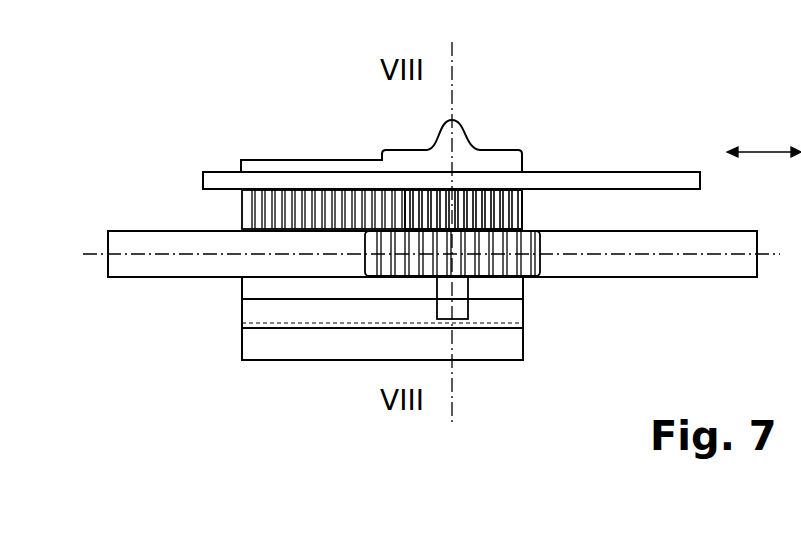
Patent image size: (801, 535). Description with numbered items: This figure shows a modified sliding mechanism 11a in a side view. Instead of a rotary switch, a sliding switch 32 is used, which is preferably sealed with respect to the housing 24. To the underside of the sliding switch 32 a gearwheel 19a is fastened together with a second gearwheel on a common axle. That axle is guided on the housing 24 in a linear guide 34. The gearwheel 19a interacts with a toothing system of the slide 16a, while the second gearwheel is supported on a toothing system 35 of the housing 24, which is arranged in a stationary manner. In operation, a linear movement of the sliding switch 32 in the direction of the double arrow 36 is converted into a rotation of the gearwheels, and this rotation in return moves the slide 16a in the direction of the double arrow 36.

The sliding mechanism 11a is at (545, 105).
The slide 16a is at (700, 263).
The gearwheel 19a is at (520, 210).
The housing 24 is at (297, 345).
The sliding switch 32 is at (643, 167).
The linear guide 34 is at (338, 307).
The toothing system 35 is at (250, 211).
The double arrow 36 is at (769, 150).